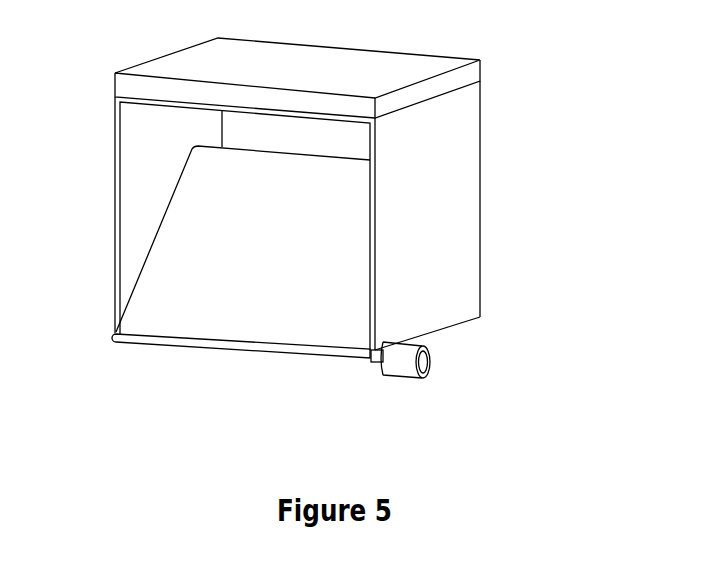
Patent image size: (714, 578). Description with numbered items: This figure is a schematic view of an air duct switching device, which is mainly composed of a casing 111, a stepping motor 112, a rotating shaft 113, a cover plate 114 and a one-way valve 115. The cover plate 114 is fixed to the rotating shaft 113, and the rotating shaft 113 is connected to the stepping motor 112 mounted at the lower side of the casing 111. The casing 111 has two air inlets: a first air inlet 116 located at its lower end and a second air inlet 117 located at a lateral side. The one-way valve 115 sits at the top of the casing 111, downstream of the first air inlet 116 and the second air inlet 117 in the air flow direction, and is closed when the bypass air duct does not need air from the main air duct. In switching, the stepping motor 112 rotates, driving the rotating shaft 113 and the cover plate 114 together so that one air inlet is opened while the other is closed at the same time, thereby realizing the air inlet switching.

The casing 111 is at (475, 215).
The stepping motor 112 is at (417, 381).
The rotating shaft 113 is at (240, 376).
The cover plate 114 is at (243, 283).
The one-way valve 115 is at (341, 75).
The first air inlet 116 is at (462, 344).
The second air inlet 117 is at (211, 223).